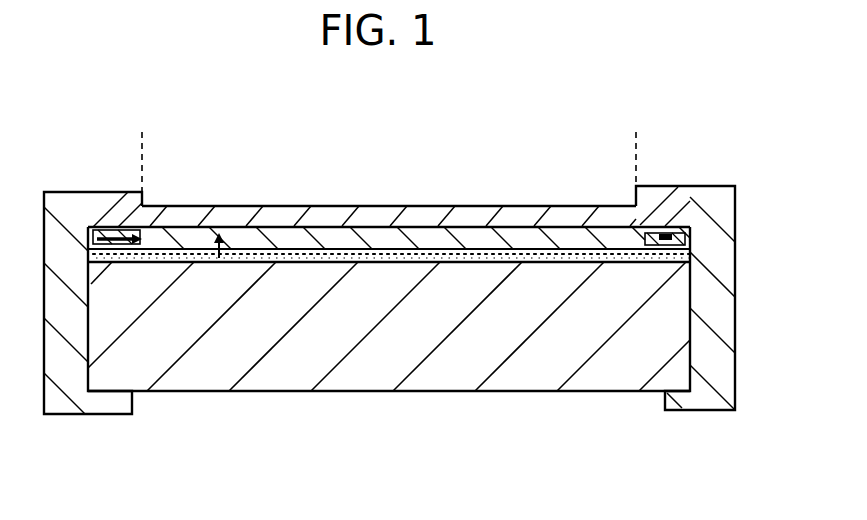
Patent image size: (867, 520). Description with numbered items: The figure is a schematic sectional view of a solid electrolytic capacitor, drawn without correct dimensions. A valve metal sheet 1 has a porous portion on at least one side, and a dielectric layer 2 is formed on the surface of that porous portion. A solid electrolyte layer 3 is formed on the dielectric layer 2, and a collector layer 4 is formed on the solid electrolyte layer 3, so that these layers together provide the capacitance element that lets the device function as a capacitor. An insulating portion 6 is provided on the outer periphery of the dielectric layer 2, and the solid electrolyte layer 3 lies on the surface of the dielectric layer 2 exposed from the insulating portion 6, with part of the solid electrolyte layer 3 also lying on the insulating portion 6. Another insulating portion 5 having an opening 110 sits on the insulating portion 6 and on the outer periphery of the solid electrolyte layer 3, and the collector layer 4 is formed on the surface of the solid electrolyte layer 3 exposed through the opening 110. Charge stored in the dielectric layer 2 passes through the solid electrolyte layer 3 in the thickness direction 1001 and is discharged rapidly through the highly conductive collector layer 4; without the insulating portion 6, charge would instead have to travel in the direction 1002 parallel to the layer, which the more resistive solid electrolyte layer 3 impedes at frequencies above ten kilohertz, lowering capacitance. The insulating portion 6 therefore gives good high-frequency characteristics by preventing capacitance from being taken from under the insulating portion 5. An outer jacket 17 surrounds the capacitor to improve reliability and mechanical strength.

The valve metal sheet 1 is at (496, 276).
The dielectric layer 2 is at (433, 247).
The solid electrolyte layer 3 is at (373, 228).
The collector layer 4 is at (314, 218).
The insulating portion 5 is at (131, 208).
The insulating portion 6 is at (107, 237).
The outer jacket 17 is at (722, 205).
The opening 110 is at (142, 133).
The thickness direction 1001 is at (222, 247).
The direction parallel to the layer 1002 is at (152, 231).